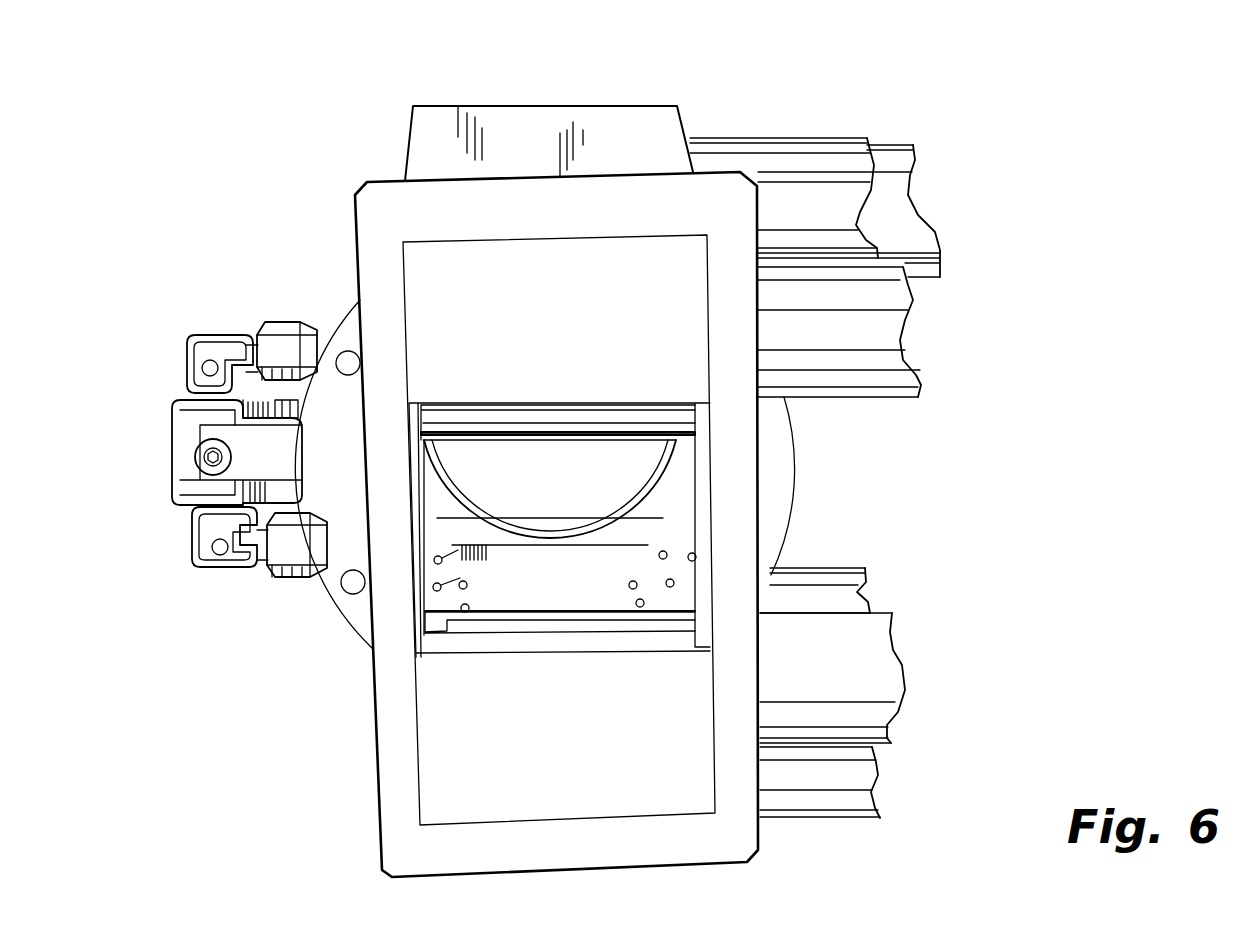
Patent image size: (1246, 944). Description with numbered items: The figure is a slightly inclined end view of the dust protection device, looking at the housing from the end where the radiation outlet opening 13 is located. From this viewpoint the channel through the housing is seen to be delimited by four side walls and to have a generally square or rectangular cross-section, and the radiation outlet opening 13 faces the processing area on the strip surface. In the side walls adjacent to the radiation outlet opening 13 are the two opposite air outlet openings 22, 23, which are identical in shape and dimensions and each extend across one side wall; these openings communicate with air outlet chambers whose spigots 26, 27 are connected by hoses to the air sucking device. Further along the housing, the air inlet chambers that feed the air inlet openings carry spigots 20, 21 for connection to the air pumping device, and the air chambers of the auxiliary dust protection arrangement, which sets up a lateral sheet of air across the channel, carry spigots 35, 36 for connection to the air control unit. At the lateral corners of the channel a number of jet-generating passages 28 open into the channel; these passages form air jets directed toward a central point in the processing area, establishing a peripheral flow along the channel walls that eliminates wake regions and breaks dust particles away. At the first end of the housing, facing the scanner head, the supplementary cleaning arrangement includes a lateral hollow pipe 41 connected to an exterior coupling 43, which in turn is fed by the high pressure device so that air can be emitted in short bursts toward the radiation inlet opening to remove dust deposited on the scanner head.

The radiation outlet opening 13 is at (698, 518).
The spigot 20 is at (850, 775).
The spigot 21 is at (842, 160).
The air outlet opening 22 is at (467, 640).
The air outlet opening 23 is at (455, 410).
The spigot 26 is at (870, 670).
The spigot 27 is at (883, 323).
The jet-generating passages 28 is at (458, 556).
The spigot 35 is at (840, 587).
The spigot 36 is at (903, 223).
The hollow pipe 41 is at (560, 534).
The exterior coupling 43 is at (231, 333).